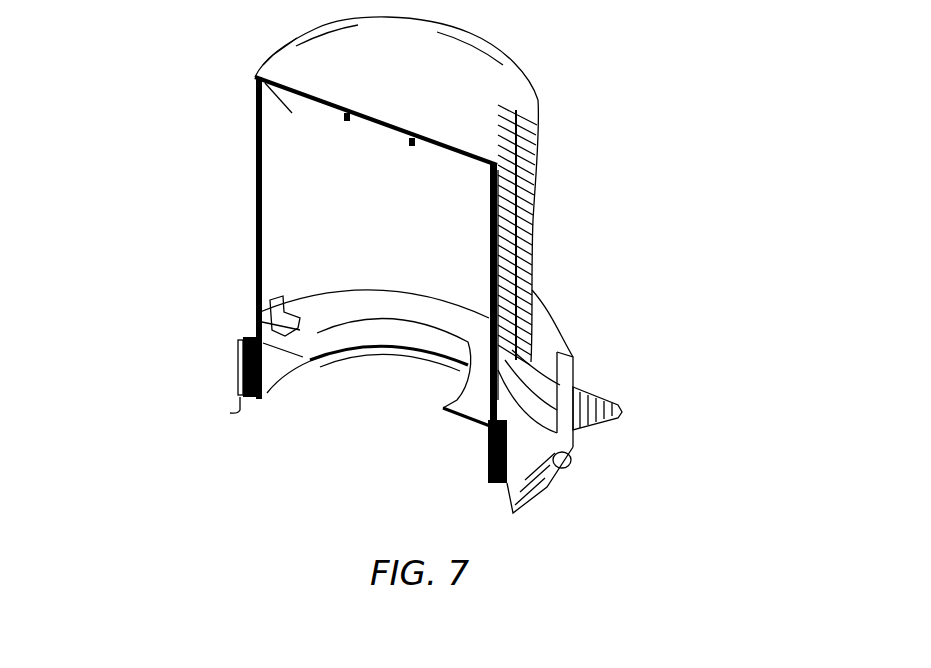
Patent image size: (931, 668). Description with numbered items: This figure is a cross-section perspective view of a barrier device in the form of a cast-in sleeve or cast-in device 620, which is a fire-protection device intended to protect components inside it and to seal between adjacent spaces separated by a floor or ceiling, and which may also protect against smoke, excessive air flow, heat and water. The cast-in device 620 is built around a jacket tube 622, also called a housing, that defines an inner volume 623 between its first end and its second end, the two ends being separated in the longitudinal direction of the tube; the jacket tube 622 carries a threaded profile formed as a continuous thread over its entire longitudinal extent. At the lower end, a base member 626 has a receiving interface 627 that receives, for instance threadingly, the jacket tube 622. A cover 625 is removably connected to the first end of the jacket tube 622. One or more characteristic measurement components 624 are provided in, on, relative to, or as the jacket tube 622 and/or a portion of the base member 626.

The cast-in device 620 is at (688, 108).
The jacket tube 622 is at (533, 249).
The inner volume 623 is at (353, 232).
The characteristic measurement component 624 is at (247, 330).
The cover 625 is at (303, 70).
The base member 626 is at (550, 487).
The receiving interface 627 is at (243, 302).